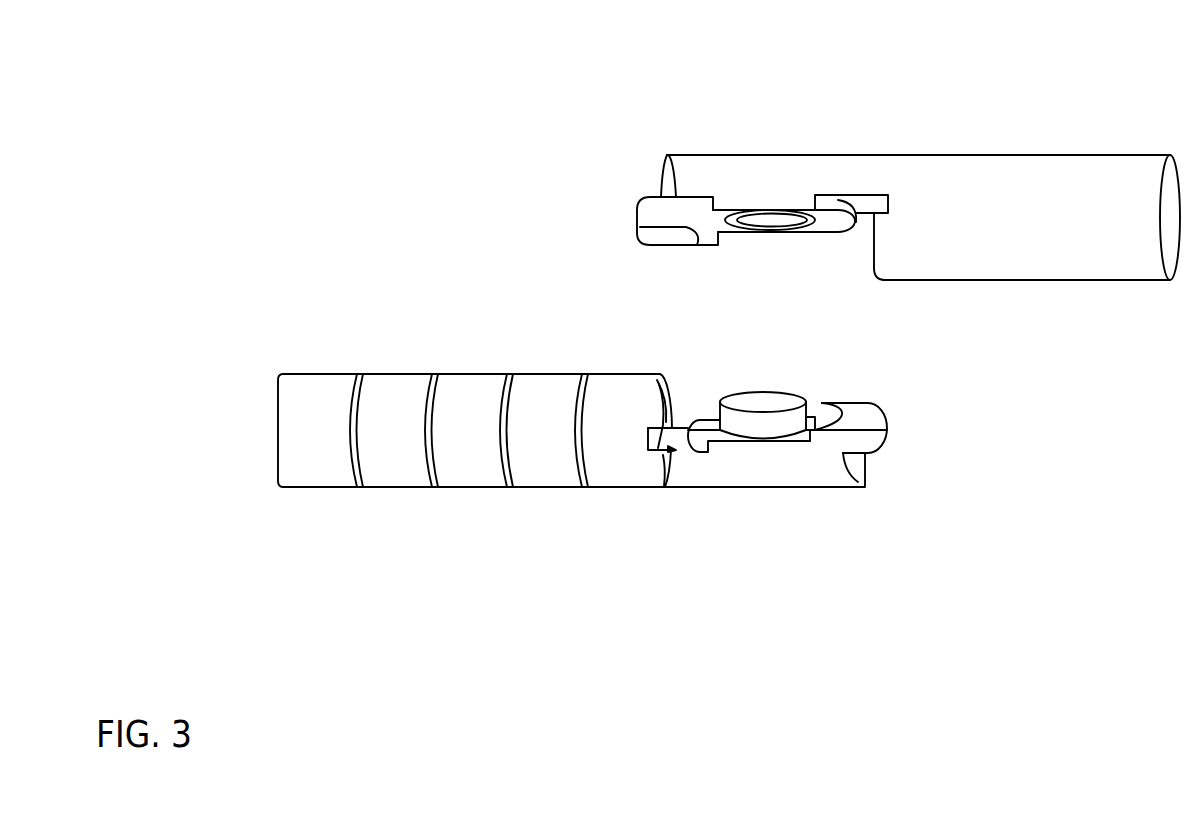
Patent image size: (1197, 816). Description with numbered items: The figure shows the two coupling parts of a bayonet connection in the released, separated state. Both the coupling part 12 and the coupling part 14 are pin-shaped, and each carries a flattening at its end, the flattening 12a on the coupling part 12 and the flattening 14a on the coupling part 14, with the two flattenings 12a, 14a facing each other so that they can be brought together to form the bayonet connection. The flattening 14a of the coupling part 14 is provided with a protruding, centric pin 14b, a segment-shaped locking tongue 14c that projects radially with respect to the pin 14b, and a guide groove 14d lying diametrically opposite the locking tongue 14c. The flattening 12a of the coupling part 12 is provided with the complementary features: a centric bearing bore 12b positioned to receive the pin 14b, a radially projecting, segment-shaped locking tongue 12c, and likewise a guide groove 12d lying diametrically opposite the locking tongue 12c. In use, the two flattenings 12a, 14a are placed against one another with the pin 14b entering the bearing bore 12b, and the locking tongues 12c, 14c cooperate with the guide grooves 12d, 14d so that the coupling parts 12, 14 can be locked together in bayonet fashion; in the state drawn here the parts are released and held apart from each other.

The coupling part 12 is at (997, 143).
The flattening 12a is at (828, 223).
The centric bearing bore 12b is at (778, 222).
The locking tongue 12c is at (655, 238).
The guide groove 12d is at (888, 207).
The coupling part 14 is at (470, 500).
The flattening 14a is at (702, 425).
The centric pin 14b is at (753, 430).
The locking tongue 14c is at (882, 433).
The guide groove 14d is at (648, 438).